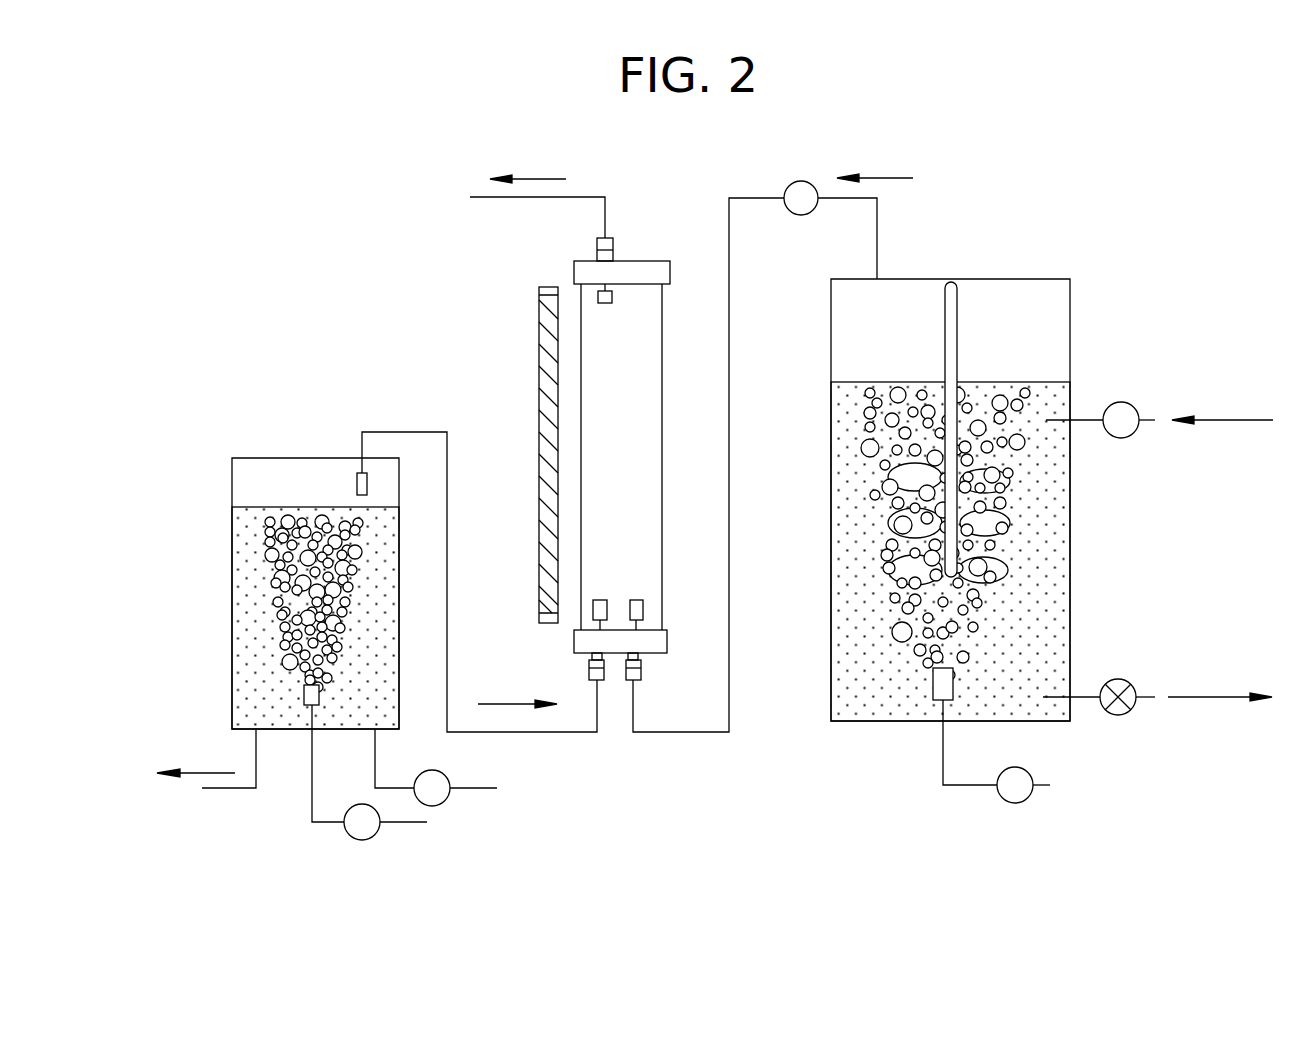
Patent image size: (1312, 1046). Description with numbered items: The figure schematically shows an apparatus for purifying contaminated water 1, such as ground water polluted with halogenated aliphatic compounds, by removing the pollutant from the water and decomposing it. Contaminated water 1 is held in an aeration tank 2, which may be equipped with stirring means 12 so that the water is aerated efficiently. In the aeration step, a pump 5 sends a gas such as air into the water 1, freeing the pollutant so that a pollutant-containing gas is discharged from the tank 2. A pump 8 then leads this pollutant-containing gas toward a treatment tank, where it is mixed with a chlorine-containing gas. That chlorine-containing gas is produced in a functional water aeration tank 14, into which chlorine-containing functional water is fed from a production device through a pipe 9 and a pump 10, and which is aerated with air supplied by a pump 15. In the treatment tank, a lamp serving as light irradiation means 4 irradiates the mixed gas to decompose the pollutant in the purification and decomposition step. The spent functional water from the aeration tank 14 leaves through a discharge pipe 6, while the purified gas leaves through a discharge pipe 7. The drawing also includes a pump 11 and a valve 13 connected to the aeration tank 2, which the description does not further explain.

The contaminated water 1 is at (1052, 548).
The aeration tank 2 is at (1042, 290).
The light irradiation means 4 is at (540, 337).
The pump 5 is at (1010, 803).
The discharge pipe 6 is at (222, 788).
The discharge pipe 7 is at (523, 197).
The pump 8 is at (810, 182).
The pipe 9 is at (481, 790).
The pump 10 is at (447, 781).
The gas supply pump 11 is at (1135, 407).
The stirring means 12 is at (960, 293).
The valve / column 13 is at (643, 338).
The functional water aeration tank 14 is at (270, 463).
The pump 15 is at (362, 840).